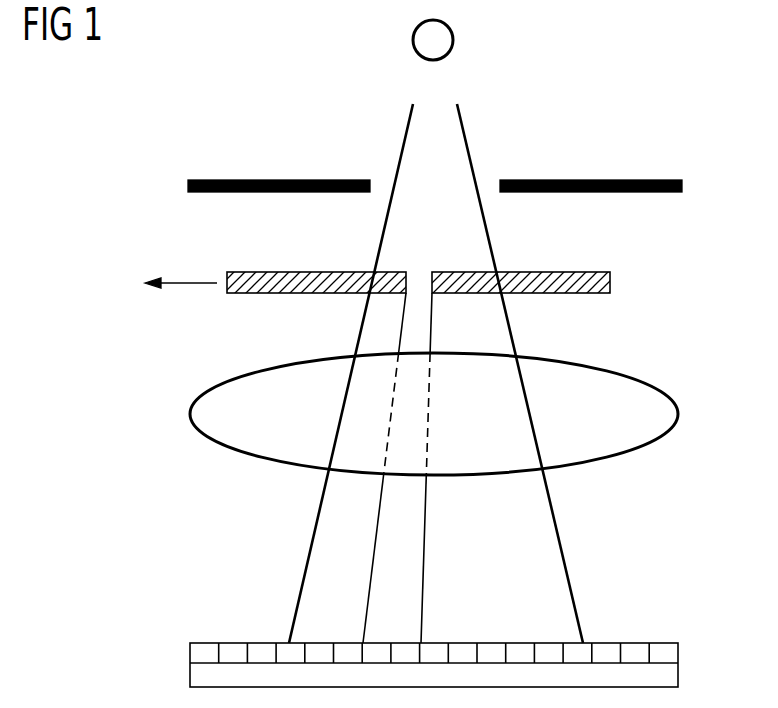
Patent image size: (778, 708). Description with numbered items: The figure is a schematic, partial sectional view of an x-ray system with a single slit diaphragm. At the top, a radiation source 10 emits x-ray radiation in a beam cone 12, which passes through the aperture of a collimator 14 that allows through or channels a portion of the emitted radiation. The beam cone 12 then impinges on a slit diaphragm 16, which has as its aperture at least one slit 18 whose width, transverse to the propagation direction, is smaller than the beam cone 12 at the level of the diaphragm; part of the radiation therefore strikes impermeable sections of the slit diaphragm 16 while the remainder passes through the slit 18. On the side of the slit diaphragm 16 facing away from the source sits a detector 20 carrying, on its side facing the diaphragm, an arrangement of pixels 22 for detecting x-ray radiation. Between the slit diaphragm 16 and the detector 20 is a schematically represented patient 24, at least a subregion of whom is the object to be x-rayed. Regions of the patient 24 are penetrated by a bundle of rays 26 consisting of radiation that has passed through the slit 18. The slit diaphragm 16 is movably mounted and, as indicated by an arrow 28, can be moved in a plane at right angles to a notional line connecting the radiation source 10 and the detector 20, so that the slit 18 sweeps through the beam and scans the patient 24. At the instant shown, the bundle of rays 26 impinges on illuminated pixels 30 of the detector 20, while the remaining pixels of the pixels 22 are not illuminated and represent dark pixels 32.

The radiation source 10 is at (447, 42).
The beam cone 12 is at (464, 131).
The collimator 14 is at (682, 186).
The slit diaphragm 16 is at (610, 283).
The slit 18 is at (415, 281).
The detector 20 is at (672, 677).
The pixels 22 is at (676, 651).
The patient 24 is at (678, 417).
The bundle of rays 26 is at (424, 557).
The arrow 28 is at (175, 281).
The illuminated pixels 30 is at (404, 656).
The dark pixels 32 is at (520, 656).